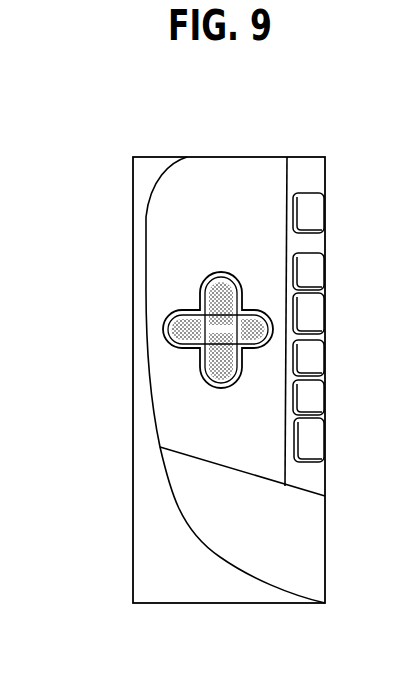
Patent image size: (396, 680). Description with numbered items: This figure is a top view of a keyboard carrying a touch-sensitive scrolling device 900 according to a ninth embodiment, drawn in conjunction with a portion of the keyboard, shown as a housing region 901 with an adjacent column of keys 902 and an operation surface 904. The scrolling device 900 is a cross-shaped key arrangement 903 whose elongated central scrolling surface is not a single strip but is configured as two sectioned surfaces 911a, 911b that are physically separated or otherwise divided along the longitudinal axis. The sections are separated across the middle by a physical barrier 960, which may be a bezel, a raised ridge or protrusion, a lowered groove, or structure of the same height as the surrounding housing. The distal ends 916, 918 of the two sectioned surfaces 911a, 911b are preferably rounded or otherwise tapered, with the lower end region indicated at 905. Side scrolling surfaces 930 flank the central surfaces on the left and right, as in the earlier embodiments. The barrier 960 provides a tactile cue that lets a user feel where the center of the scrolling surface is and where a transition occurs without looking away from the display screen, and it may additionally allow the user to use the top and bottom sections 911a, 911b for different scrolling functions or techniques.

The scrolling device 900 is at (168, 333).
The controller housing 901 is at (230, 170).
The button group 902 is at (322, 307).
The key top of cross key 903 is at (205, 312).
The operation surface 904 is at (202, 212).
The lower edge of cross key 905 is at (202, 371).
The sectioned surface 911a is at (220, 270).
The sectioned surface 911b is at (195, 347).
The distal end 916 is at (228, 283).
The distal end 918 is at (213, 388).
The side scrolling surface 930 is at (175, 327).
The physical barrier 960 is at (186, 309).